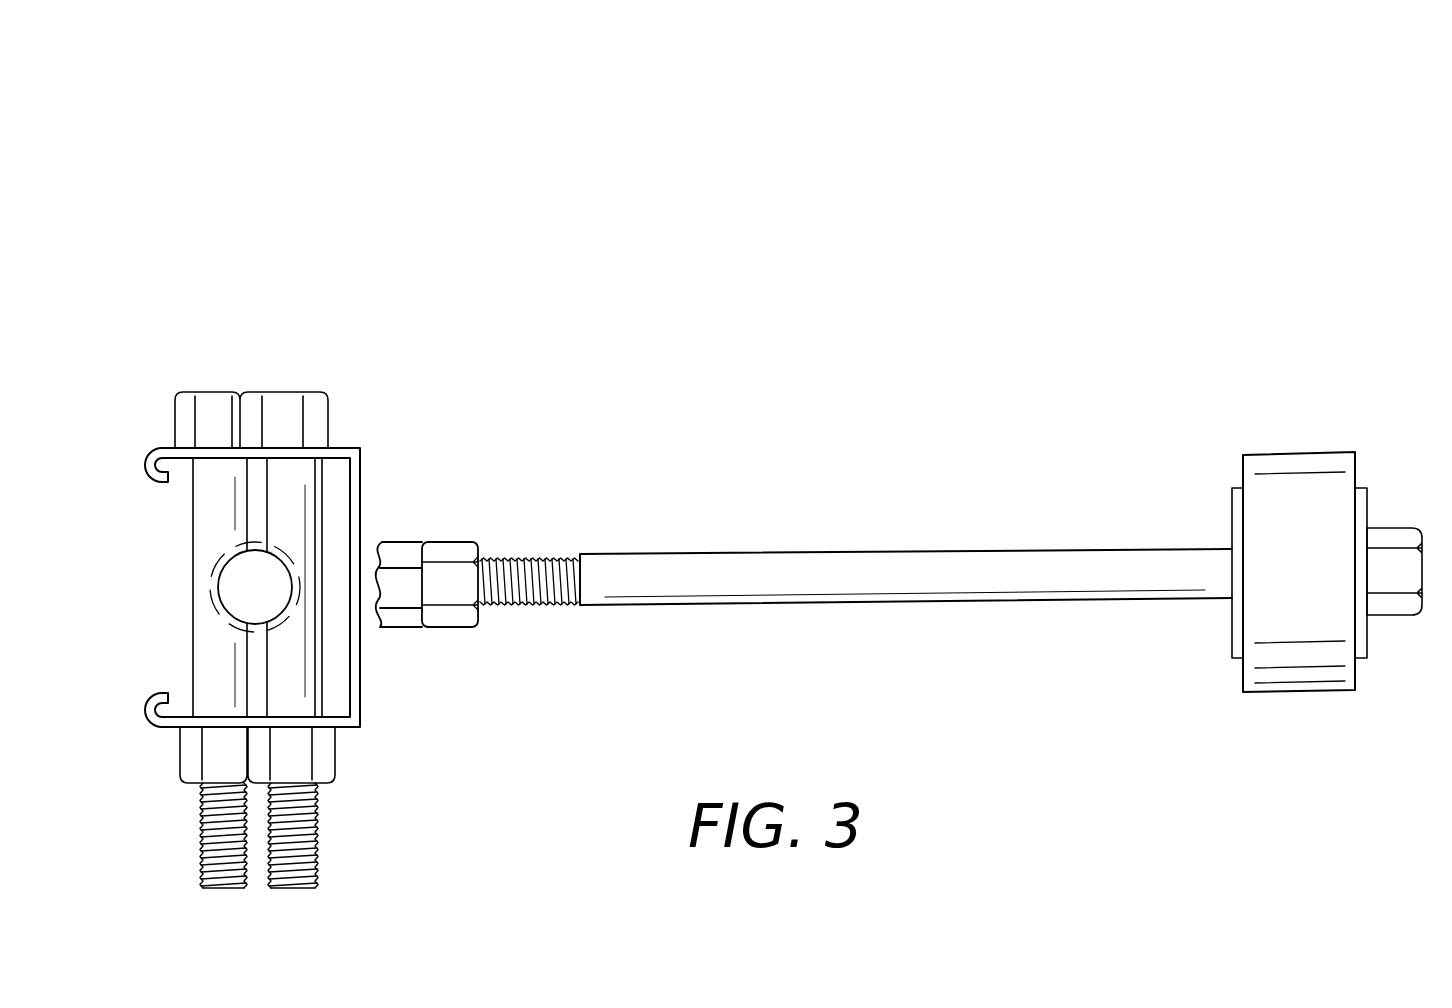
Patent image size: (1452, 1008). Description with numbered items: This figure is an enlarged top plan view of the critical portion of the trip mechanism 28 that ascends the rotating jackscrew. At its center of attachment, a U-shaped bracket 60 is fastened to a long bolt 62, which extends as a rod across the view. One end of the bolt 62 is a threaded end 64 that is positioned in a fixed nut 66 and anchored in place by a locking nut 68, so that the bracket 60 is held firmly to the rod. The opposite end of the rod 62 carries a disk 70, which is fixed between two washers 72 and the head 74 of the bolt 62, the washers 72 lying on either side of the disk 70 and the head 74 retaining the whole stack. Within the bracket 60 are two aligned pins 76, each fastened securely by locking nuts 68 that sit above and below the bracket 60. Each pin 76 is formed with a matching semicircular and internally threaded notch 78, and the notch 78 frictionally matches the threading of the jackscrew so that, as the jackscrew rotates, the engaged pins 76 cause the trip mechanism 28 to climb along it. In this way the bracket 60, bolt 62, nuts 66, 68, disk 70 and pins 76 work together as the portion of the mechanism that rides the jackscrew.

The trip mechanism 28 is at (798, 184).
The U-shaped bracket 60 is at (365, 486).
The long bolt 62 is at (853, 551).
The threaded end 64 is at (543, 606).
The fixed nut 66 is at (395, 618).
The locking nut 68 is at (458, 526).
The disk 70 is at (1318, 567).
The washers 72 is at (1232, 502).
The head 74 is at (1395, 535).
The pin 76 is at (277, 502).
The notch 78 is at (274, 603).